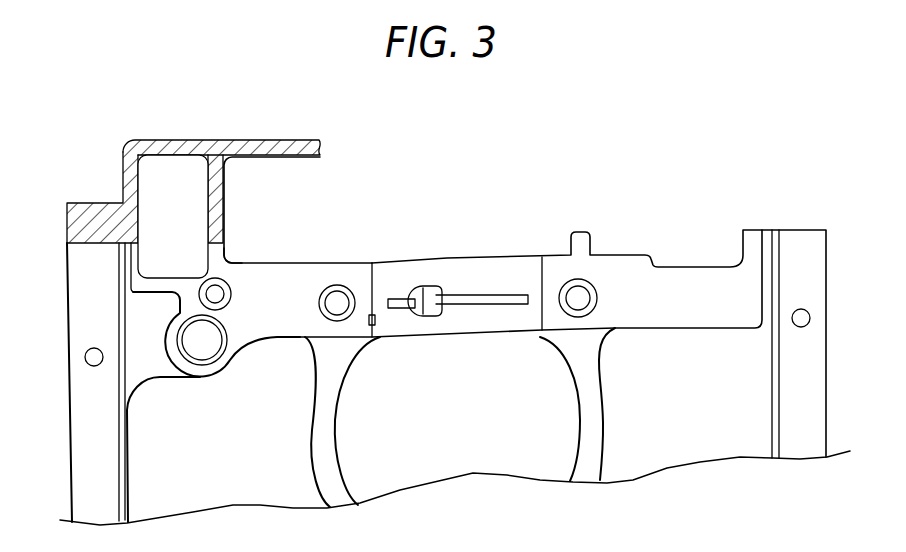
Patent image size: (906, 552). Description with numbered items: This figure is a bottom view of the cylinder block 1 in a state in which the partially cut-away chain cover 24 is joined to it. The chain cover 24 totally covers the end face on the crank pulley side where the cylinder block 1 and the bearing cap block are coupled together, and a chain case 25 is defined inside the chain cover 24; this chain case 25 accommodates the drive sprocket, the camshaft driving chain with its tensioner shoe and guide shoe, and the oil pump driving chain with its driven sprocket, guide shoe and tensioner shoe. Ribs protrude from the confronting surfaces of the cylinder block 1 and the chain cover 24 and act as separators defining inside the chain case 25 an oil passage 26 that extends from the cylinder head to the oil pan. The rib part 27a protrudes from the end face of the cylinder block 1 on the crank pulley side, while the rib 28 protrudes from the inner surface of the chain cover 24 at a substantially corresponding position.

The cylinder block 1 is at (682, 462).
The chain cover 24 is at (277, 140).
The chain case 25 is at (328, 221).
The oil passage 26 is at (195, 228).
The rib part 27a is at (223, 257).
The rib 28 is at (222, 173).